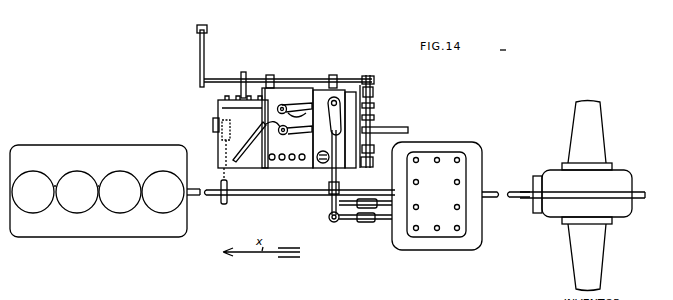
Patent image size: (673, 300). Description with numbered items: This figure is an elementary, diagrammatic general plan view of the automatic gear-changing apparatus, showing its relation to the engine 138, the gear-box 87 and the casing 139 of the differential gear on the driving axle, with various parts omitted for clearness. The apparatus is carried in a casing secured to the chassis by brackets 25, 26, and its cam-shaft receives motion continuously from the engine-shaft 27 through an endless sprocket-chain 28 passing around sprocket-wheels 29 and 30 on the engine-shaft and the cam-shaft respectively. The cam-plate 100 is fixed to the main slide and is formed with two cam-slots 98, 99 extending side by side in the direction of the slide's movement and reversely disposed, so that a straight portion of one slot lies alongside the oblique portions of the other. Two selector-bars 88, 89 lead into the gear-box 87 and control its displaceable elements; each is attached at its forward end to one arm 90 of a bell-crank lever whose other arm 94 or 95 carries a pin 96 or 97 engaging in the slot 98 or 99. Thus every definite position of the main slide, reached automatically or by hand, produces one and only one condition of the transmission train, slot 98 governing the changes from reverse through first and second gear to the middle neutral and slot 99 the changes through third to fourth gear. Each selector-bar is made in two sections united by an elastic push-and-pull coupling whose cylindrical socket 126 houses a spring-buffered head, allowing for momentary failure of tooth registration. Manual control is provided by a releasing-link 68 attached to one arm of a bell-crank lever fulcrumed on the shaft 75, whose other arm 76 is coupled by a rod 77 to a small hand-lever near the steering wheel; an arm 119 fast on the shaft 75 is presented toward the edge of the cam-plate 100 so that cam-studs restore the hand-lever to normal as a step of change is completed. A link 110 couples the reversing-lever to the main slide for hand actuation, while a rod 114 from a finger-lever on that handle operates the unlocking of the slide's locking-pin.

The engine 138 is at (103, 237).
The sprocket-wheel 29 is at (216, 205).
The rod 77 is at (197, 30).
The arm of bell-crank lever 76 is at (200, 52).
The fulcrum shaft 75 is at (219, 79).
The arm 119 is at (243, 72).
The cam-plate 100 is at (216, 160).
The endless sprocket-chain 28 is at (217, 142).
The sprocket-wheel 30 is at (217, 118).
The cam-slot 99 is at (218, 102).
The bracket 25 is at (263, 88).
The pin 97 is at (282, 104).
The arm of bell-crank lever 95 is at (294, 104).
The pin 96 is at (282, 135).
The cam-slot 98 is at (238, 168).
The arm of bell-crank lever 94 is at (302, 140).
The bracket 26 is at (340, 90).
The releasing-link 68 is at (374, 92).
The link 110 is at (398, 126).
The arm of bell-crank lever 90 is at (330, 172).
The selector-bar 88 is at (339, 223).
The cylindrical socket 126 is at (366, 210).
The rod 114 is at (348, 222).
The selector-bar 89 is at (382, 222).
The gear-box 87 is at (448, 243).
The engine-shaft 27 is at (523, 199).
The casing of the differential gear 139 is at (557, 205).